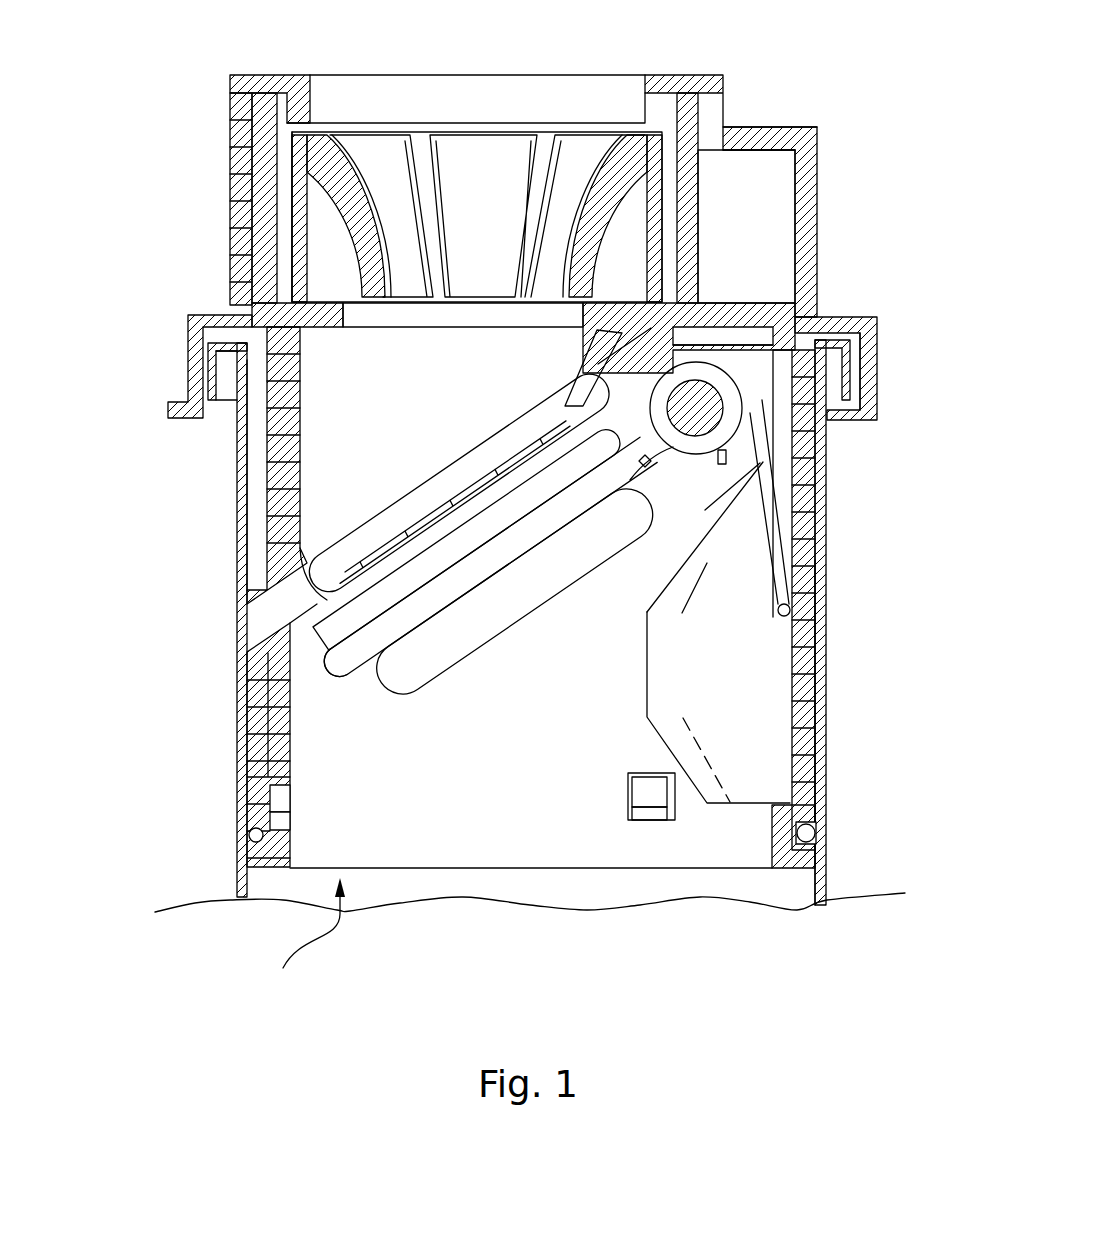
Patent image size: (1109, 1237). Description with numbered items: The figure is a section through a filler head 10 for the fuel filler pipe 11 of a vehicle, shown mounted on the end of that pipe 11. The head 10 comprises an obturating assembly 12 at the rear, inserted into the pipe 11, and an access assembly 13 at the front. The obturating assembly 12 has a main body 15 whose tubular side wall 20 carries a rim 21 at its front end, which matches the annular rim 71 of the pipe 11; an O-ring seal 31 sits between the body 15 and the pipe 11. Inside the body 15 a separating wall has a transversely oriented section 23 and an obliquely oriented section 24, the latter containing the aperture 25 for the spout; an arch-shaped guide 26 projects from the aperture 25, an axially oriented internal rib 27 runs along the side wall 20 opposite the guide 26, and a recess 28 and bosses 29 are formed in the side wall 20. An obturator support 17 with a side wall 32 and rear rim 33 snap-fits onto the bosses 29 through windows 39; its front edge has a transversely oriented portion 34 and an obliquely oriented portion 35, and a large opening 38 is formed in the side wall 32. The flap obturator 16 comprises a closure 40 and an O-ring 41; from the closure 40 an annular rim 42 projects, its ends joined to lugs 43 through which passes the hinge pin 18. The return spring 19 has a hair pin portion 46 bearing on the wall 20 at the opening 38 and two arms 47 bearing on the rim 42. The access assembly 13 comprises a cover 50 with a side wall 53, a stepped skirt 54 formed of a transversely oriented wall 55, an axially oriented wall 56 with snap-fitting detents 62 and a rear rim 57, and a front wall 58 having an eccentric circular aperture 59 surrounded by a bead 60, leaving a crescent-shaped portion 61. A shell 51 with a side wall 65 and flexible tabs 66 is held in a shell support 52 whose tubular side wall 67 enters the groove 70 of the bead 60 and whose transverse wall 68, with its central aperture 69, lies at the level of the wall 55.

The filler head 10 is at (213, 50).
The filler pipe 11 is at (240, 690).
The obturating assembly 12 is at (530, 938).
The access assembly 13 is at (186, 264).
The main body 15 is at (810, 555).
The flap obturator 16 is at (452, 655).
The obturator support 17 is at (268, 742).
The hinge pin 18 is at (702, 452).
The return spring 19 is at (776, 487).
The side wall 20 is at (270, 490).
The rim 21 is at (840, 330).
The transversely oriented section 23 is at (730, 330).
The obliquely oriented section 24 is at (622, 306).
The aperture 25 is at (490, 452).
The guide 26 is at (578, 362).
The internal rib 27 is at (282, 410).
The recess 28 is at (250, 456).
The bosses 29 is at (282, 793).
The O-ring seal 31 is at (815, 830).
The side wall 32 is at (838, 395).
The rim 33 is at (802, 855).
The transversely oriented portion 34 is at (703, 345).
The obliquely oriented portion 35 is at (284, 638).
The opening 38 is at (685, 667).
The windows 39 is at (282, 820).
The closure 40 is at (448, 500).
The O-ring 41 is at (345, 662).
The annular rim 42 is at (325, 672).
The lugs 43 is at (705, 452).
The hair pin portion 46 is at (803, 583).
The arms 47 is at (632, 484).
The cover 50 is at (242, 167).
The shell 51 is at (272, 148).
The shell support 52 is at (256, 201).
The side wall 53 is at (806, 185).
The skirt 54 is at (881, 295).
The transversely oriented wall 55 is at (206, 318).
The axially oriented wall 56 is at (200, 352).
The rim 57 is at (212, 398).
The transversely oriented wall 58 is at (829, 77).
The circular aperture 59 is at (392, 92).
The bead 60 is at (265, 78).
The crescent-shaped portion 61 is at (767, 128).
The snap-fitting detents 62 is at (222, 410).
The side wall 65 is at (303, 217).
The flexible tabs 66 is at (364, 176).
The tubular side wall 67 is at (758, 140).
The transverse wall 68 is at (760, 330).
The central aperture 69 is at (420, 320).
The groove 70 is at (681, 96).
The annular rim 71 is at (880, 380).